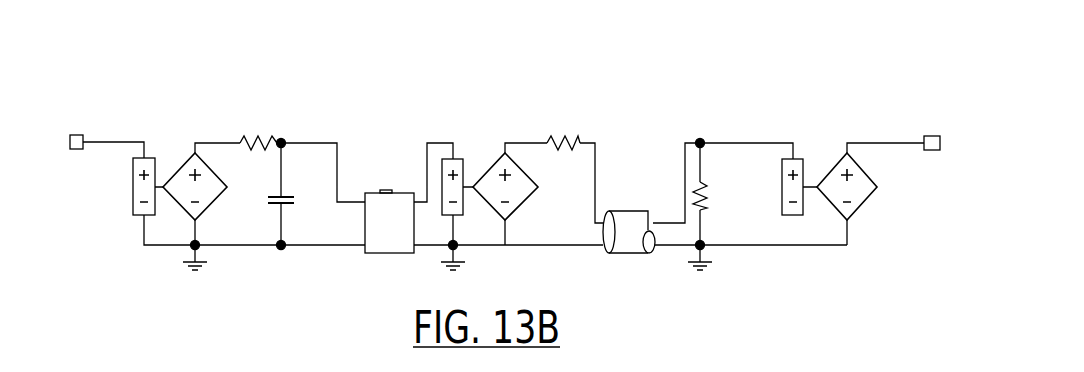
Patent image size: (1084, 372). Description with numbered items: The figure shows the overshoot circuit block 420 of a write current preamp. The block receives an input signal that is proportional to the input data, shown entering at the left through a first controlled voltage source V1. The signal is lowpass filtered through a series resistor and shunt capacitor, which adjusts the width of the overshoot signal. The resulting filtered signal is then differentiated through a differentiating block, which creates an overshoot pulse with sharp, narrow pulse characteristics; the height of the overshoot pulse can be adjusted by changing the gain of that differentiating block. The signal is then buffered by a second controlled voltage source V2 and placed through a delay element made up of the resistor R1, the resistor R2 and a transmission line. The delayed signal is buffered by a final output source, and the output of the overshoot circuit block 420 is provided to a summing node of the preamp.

The overshoot circuit block 420 is at (496, 152).
The voltage-controlled voltage source V1 is at (214, 188).
The voltage-controlled voltage source V2 is at (525, 191).
The delay element resistor R1 is at (559, 146).
The delay element resistor R2 is at (734, 179).